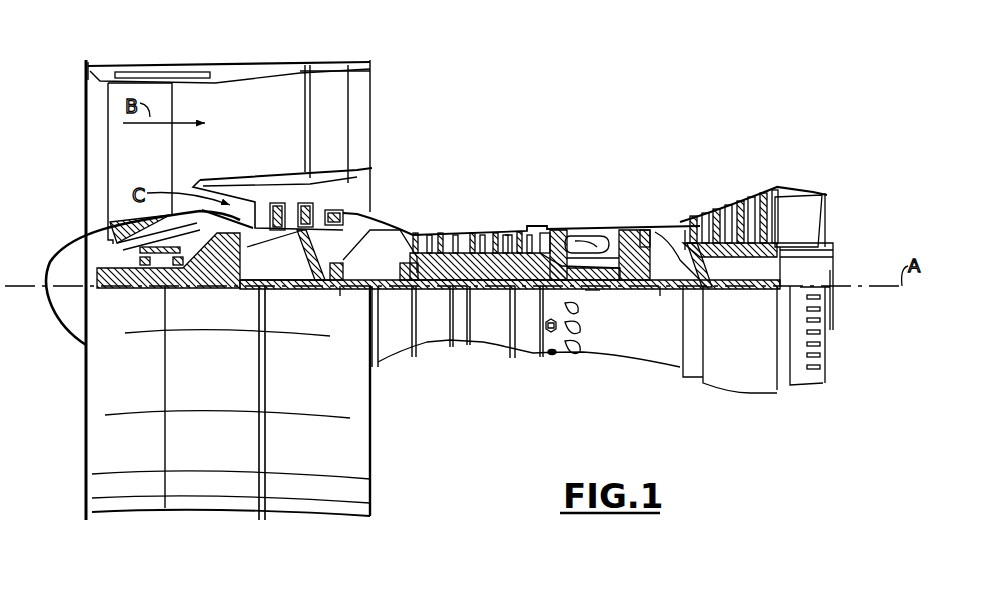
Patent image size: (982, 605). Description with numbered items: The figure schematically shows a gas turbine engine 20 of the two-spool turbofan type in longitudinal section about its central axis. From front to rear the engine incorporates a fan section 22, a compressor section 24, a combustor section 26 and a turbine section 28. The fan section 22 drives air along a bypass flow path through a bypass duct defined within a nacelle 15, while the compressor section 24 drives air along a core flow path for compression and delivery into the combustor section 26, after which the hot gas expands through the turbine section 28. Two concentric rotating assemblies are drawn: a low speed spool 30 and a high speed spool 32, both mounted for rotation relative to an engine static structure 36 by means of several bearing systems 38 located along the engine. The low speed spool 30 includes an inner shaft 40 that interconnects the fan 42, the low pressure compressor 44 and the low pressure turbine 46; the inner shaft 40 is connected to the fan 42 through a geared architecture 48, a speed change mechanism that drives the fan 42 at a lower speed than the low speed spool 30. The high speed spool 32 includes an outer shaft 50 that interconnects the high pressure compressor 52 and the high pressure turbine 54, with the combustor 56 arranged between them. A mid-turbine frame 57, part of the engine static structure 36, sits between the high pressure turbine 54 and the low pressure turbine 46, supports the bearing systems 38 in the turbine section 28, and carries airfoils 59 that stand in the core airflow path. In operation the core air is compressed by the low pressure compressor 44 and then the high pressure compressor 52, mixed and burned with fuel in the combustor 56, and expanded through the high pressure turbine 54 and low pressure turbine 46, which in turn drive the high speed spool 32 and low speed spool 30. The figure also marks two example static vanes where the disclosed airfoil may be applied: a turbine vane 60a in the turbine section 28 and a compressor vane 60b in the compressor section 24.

The nacelle 15 is at (173, 60).
The gas turbine engine 20 is at (361, 189).
The fan section 22 is at (590, 100).
The compressor section 24 is at (400, 213).
The combustor section 26 is at (583, 207).
The turbine section 28 is at (698, 180).
The low speed spool 30 is at (492, 297).
The high speed spool 32 is at (527, 230).
The engine static structure 36 is at (525, 367).
The bearing systems 38 is at (338, 284).
The inner shaft 40 is at (380, 357).
The fan 42 is at (156, 165).
The low pressure compressor 44 is at (313, 207).
The low pressure turbine 46 is at (735, 193).
The geared architecture 48 is at (232, 290).
The outer shaft 50 is at (592, 287).
The high pressure compressor 52 is at (470, 230).
The high pressure turbine 54 is at (633, 227).
The combustor 56 is at (588, 240).
The mid-turbine frame 57 is at (674, 213).
The airfoils 59 is at (695, 258).
The turbine vane 60a is at (688, 213).
The compressor vane 60b is at (509, 230).